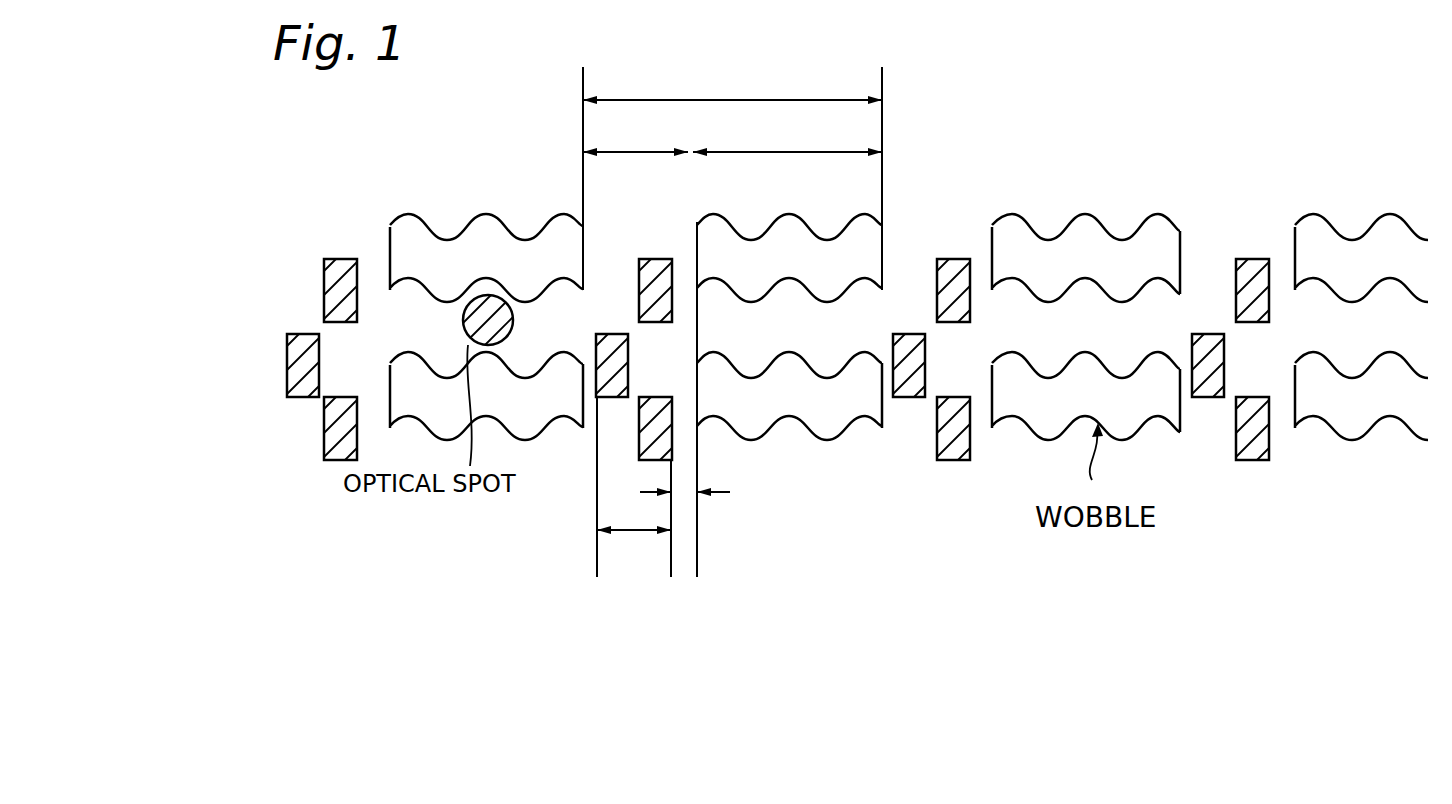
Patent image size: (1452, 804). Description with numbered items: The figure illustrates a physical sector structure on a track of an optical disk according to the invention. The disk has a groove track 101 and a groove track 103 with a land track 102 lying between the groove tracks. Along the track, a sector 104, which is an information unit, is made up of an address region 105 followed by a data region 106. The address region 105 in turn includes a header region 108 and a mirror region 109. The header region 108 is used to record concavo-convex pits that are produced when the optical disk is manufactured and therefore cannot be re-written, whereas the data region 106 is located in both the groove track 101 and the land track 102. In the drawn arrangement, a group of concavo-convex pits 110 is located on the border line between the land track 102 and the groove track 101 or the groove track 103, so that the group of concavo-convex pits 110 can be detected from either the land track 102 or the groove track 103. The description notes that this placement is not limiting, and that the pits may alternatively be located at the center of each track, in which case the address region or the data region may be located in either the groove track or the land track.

The groove track 101 is at (230, 258).
The land track 102 is at (230, 320).
The groove track 103 is at (230, 403).
The sector 104 is at (737, 98).
The address region 105 is at (632, 125).
The data region 106 is at (780, 154).
The header region 108 is at (627, 532).
The mirror region 109 is at (710, 399).
The group of concavo-convex pits 110 is at (612, 398).